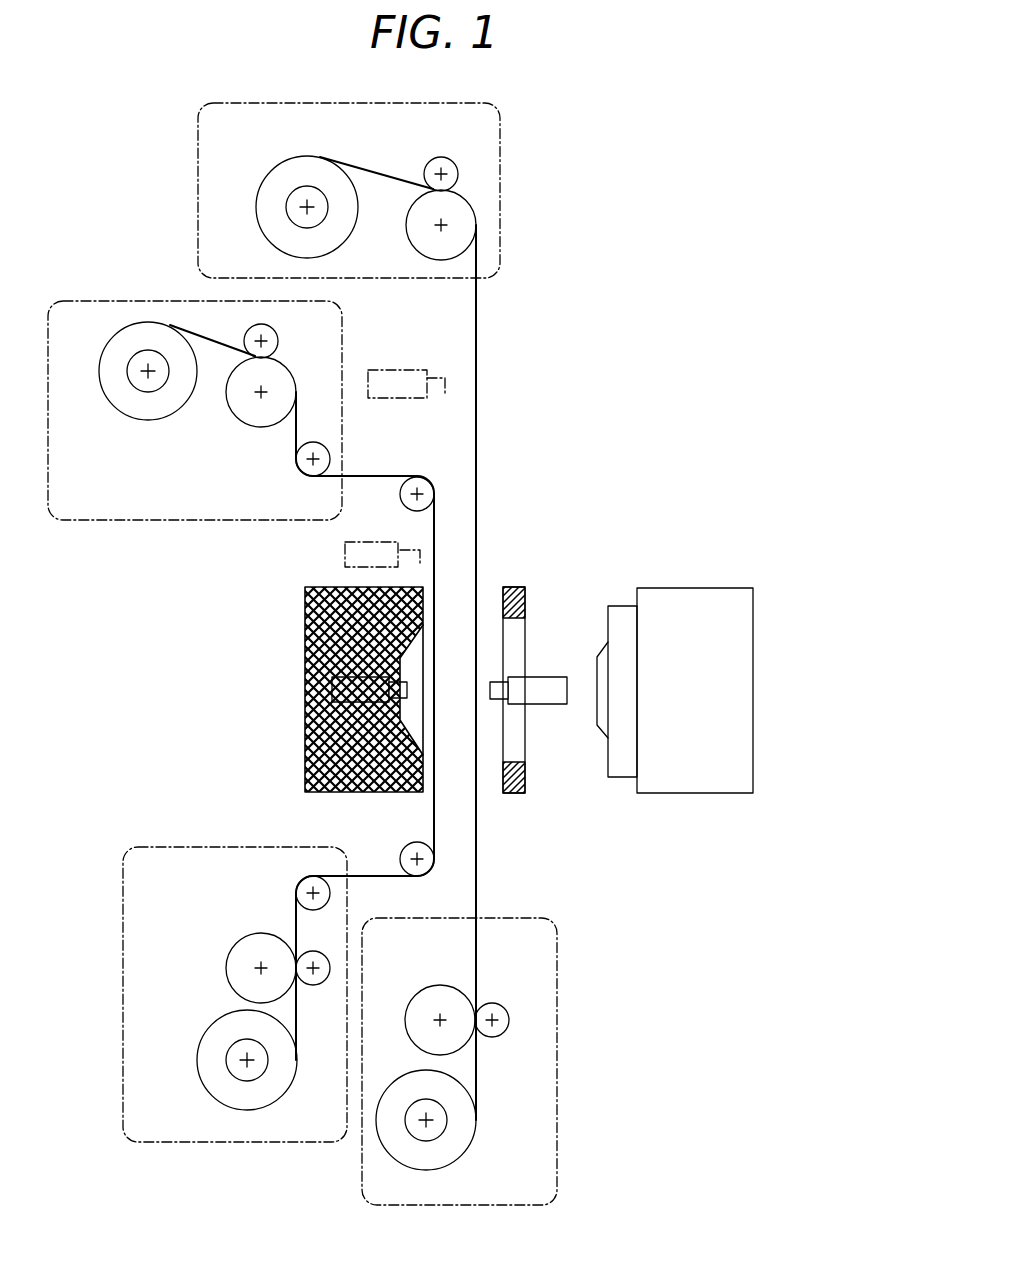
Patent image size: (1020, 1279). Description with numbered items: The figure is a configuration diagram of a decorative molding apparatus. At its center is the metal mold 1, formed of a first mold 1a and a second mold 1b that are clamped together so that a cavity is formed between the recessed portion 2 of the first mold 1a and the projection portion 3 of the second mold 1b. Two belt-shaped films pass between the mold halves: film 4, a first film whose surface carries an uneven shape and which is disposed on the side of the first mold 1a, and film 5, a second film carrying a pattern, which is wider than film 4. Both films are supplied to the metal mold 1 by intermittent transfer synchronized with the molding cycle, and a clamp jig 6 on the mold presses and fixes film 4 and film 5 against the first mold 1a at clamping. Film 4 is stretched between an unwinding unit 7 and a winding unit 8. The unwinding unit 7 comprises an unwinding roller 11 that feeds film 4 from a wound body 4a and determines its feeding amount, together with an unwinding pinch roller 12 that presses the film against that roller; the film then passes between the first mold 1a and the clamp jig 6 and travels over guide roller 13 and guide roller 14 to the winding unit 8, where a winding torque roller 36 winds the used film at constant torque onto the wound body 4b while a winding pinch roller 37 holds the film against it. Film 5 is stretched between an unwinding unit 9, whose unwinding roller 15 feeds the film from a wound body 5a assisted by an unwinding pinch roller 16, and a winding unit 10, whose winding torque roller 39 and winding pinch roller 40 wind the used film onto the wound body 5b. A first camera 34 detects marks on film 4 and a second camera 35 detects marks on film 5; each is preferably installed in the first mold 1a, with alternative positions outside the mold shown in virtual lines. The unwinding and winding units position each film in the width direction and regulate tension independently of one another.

The metal mold 1 is at (734, 651).
The first mold 1a is at (307, 635).
The second mold 1b is at (743, 677).
The recessed portion 2 is at (418, 718).
The projection portion 3 is at (605, 655).
The film 4 is at (370, 473).
The wound body 4a is at (138, 405).
The wound body of used film 4b is at (222, 1033).
The film 5 is at (476, 422).
The wound body 5a is at (297, 178).
The wound body of used film 5b is at (453, 1147).
The clamp jig 6 is at (515, 786).
The unwinding unit 7 is at (139, 521).
The winding unit 8 is at (123, 933).
The unwinding unit 9 is at (500, 135).
The winding unit 10 is at (557, 992).
The unwinding roller 11 is at (253, 405).
The unwinding pinch roller 12 is at (270, 345).
The guide roller 13 is at (405, 502).
The guide roller 14 is at (405, 853).
The unwinding roller 15 is at (427, 235).
The unwinding pinch roller 16 is at (428, 168).
The camera 34 is at (345, 560).
The camera 35 is at (397, 378).
The winding torque roller 36 is at (252, 948).
The winding pinch roller 37 is at (313, 984).
The winding torque roller 39 is at (425, 1003).
The winding pinch roller 40 is at (497, 1033).